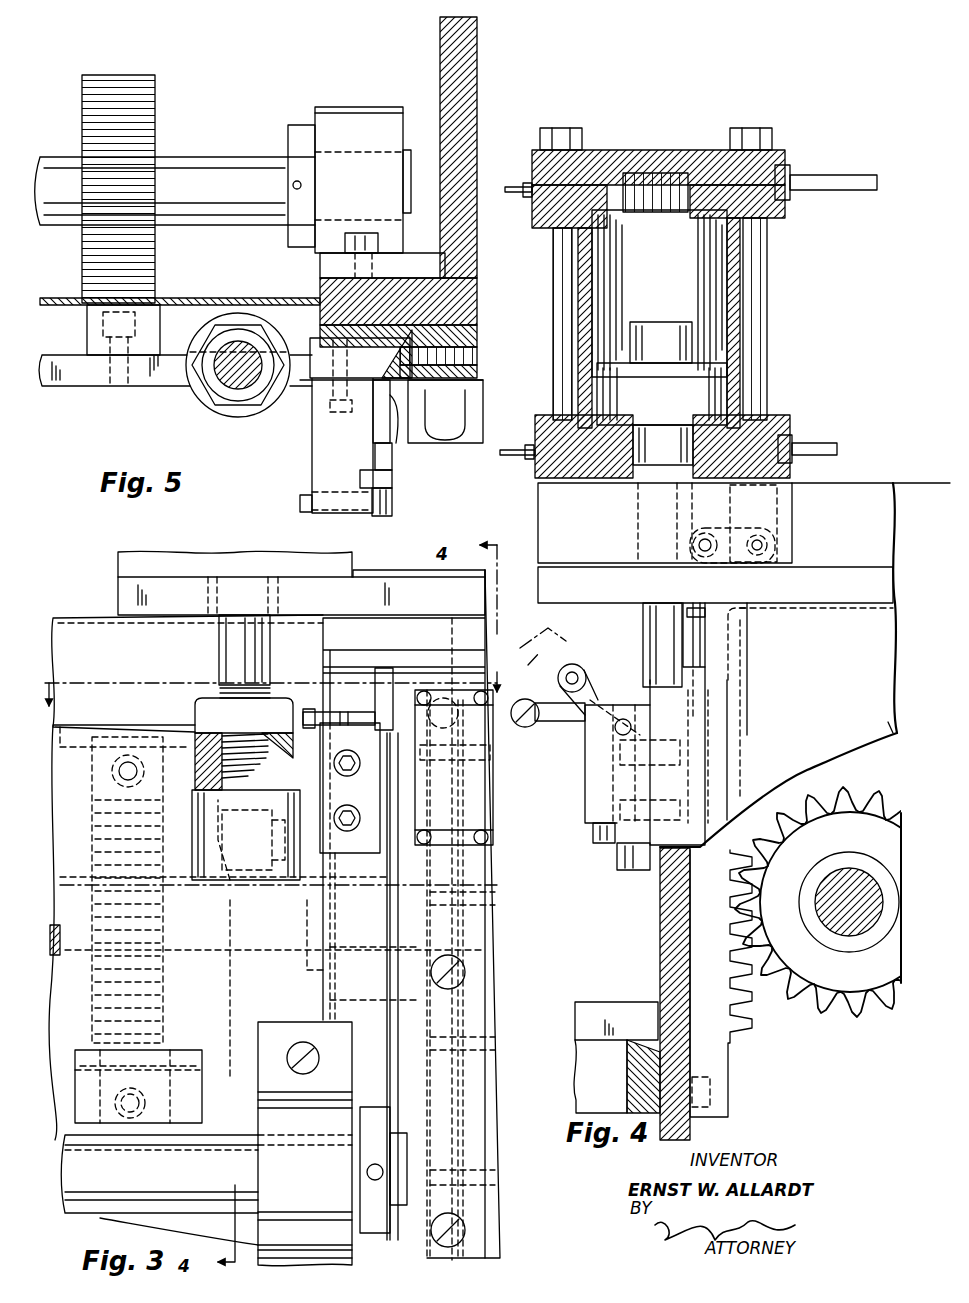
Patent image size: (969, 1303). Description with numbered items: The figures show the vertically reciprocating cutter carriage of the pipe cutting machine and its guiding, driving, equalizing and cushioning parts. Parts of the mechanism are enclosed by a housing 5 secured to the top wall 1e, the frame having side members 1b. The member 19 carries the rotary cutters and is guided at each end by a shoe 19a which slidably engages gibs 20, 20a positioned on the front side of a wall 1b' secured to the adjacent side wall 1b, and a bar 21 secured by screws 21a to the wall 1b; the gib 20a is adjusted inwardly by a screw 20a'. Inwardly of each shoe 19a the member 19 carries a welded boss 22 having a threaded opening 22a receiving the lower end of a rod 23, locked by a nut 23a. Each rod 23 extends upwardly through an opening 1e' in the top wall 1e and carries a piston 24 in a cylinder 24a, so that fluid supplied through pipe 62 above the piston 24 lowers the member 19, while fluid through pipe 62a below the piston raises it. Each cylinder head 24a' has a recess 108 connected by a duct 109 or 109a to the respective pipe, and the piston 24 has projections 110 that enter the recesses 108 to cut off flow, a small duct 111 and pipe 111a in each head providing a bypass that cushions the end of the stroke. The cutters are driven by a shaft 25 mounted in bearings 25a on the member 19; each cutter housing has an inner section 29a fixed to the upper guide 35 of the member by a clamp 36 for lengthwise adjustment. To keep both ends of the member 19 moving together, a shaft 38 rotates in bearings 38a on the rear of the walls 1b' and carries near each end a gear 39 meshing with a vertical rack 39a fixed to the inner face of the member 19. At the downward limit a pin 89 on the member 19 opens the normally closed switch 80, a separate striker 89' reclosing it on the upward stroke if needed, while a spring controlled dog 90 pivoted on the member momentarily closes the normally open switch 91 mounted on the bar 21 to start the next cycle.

In FIG. 5, the side member 1b is at (473, 147).
In FIG. 4, the side member 1b is at (778, 784).
In FIG. 3, the side member 1b is at (508, 1208).
In FIG. 5, the wall 1b' is at (492, 292).
In FIG. 4, the top wall 1e is at (715, 565).
In FIG. 3, the top wall 1e is at (301, 575).
In FIG. 4, the opening 1e' is at (600, 588).
In FIG. 3, the opening 1e' is at (297, 593).
In FIG. 5, the housing 5 is at (190, 298).
In FIG. 4, the housing 5 is at (840, 610).
In FIG. 3, the housing 5 is at (92, 618).
In FIG. 5, the reciprocating member 19 is at (78, 386).
In FIG. 4, the reciprocating member 19 is at (660, 968).
In FIG. 3, the reciprocating member 19 is at (77, 735).
In FIG. 5, the shoe 19a is at (320, 383).
In FIG. 3, the shoe 19a is at (323, 986).
In FIG. 5, the gib 20 is at (325, 318).
In FIG. 5, the adjustable gib 20a is at (396, 302).
In FIG. 3, the adjustable gib 20a is at (373, 986).
In FIG. 5, the screw 20a' is at (453, 354).
In FIG. 5, the bar 21 is at (478, 337).
In FIG. 3, the bar 21 is at (498, 1128).
In FIG. 3, the screws 21a is at (468, 972).
In FIG. 5, the boss 22 is at (195, 390).
In FIG. 4, the boss 22 is at (636, 870).
In FIG. 3, the boss 22 is at (206, 880).
In FIG. 3, the threaded opening 22a is at (212, 805).
In FIG. 5, the rod 23 is at (225, 396).
In FIG. 4, the rod 23 is at (645, 626).
In FIG. 3, the rod 23 is at (230, 642).
In FIG. 5, the nut 23a is at (246, 400).
In FIG. 3, the nut 23a is at (200, 712).
In FIG. 4, the piston 24 is at (742, 368).
In FIG. 4, the cylinder 24a is at (686, 323).
In FIG. 4, the cylinder head 24a' is at (676, 287).
In FIG. 3, the cylinder head 24a' is at (235, 548).
In FIG. 3, the driven shaft 25 is at (215, 1133).
In FIG. 3, the bearings 25a is at (268, 1172).
In FIG. 4, the inner housing section 29a is at (625, 1088).
In FIG. 4, the upper guide 35 is at (632, 1100).
In FIG. 3, the upper guide 35 is at (186, 1058).
In FIG. 4, the clamp 36 is at (600, 1002).
In FIG. 5, the shaft 38 is at (172, 168).
In FIG. 4, the shaft 38 is at (858, 932).
In FIG. 3, the shaft 38 is at (60, 955).
In FIG. 5, the bearings 38a is at (378, 118).
In FIG. 5, the gear 39 is at (135, 103).
In FIG. 4, the gear 39 is at (862, 1012).
In FIG. 5, the rack 39a is at (85, 313).
In FIG. 4, the rack 39a is at (755, 1048).
In FIG. 3, the rack 39a is at (92, 775).
In FIG. 4, the pipe 62 is at (848, 178).
In FIG. 4, the pipe 62a is at (822, 445).
In FIG. 4, the normally closed switch 80 is at (867, 490).
In FIG. 4, the pin 89 is at (732, 525).
In FIG. 4, the separate striker 89' is at (721, 683).
In FIG. 5, the spring controlled dog 90 is at (395, 478).
In FIG. 4, the spring controlled dog 90 is at (556, 696).
In FIG. 3, the spring controlled dog 90 is at (383, 668).
In FIG. 5, the normally open switch 91 is at (476, 443).
In FIG. 4, the normally open switch 91 is at (620, 705).
In FIG. 3, the normally open switch 91 is at (487, 798).
In FIG. 4, the recess 108 is at (655, 178).
In FIG. 4, the duct 109 is at (698, 185).
In FIG. 4, the duct 109a is at (753, 522).
In FIG. 4, the projection 110 is at (658, 332).
In FIG. 4, the small duct 111 is at (540, 226).
In FIG. 4, the pipe 111a is at (526, 447).